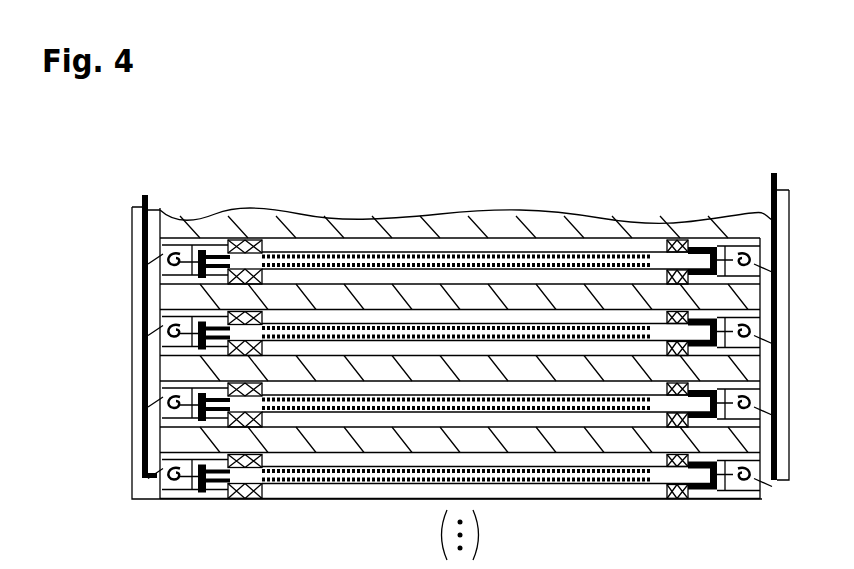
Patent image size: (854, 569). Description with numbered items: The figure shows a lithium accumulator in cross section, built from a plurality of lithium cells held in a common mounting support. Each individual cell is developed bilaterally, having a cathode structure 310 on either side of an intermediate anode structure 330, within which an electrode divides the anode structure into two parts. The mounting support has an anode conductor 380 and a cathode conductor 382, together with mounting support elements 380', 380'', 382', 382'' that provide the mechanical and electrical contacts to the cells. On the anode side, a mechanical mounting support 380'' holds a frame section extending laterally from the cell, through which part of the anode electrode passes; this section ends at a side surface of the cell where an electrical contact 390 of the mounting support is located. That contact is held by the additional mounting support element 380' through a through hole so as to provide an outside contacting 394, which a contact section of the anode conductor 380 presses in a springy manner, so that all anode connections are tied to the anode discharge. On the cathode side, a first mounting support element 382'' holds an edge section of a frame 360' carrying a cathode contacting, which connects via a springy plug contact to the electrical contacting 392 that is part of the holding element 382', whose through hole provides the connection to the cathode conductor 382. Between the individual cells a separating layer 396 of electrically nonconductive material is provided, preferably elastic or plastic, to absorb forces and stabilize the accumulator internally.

The cathode structure 310 is at (394, 262).
The anode structure 330 is at (455, 250).
The frame 360' is at (660, 200).
The anode conductor 380 is at (99, 336).
The additional mounting support element 380' is at (460, 166).
The mechanical mounting support 380'' is at (278, 208).
The cathode conductor 382 is at (785, 299).
The holding element 382' is at (744, 184).
The first mounting support element 382'' is at (662, 188).
The electrical contact 390 is at (206, 250).
The electrical contacting 392 is at (700, 250).
The outside contacting 394 is at (184, 245).
The separating layer 396 is at (175, 297).